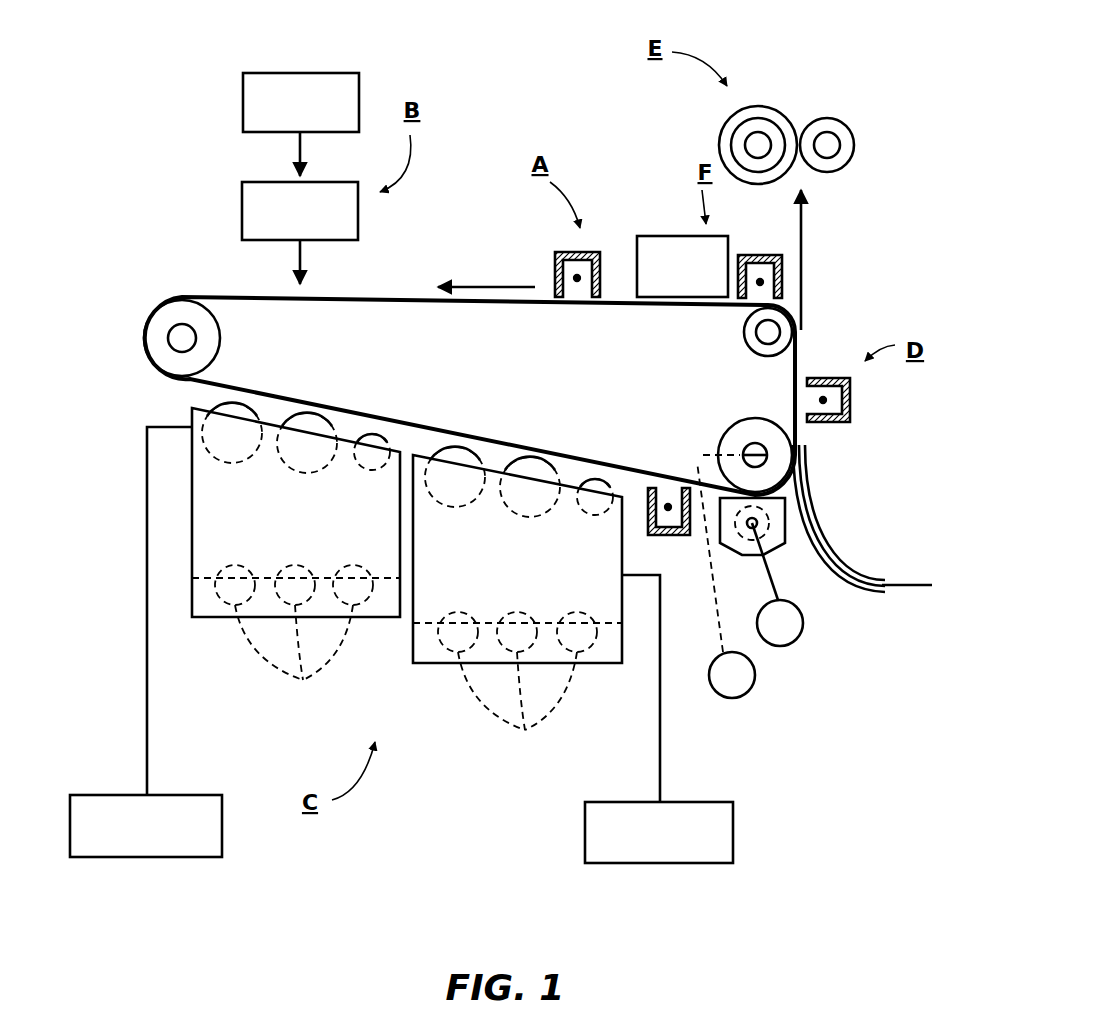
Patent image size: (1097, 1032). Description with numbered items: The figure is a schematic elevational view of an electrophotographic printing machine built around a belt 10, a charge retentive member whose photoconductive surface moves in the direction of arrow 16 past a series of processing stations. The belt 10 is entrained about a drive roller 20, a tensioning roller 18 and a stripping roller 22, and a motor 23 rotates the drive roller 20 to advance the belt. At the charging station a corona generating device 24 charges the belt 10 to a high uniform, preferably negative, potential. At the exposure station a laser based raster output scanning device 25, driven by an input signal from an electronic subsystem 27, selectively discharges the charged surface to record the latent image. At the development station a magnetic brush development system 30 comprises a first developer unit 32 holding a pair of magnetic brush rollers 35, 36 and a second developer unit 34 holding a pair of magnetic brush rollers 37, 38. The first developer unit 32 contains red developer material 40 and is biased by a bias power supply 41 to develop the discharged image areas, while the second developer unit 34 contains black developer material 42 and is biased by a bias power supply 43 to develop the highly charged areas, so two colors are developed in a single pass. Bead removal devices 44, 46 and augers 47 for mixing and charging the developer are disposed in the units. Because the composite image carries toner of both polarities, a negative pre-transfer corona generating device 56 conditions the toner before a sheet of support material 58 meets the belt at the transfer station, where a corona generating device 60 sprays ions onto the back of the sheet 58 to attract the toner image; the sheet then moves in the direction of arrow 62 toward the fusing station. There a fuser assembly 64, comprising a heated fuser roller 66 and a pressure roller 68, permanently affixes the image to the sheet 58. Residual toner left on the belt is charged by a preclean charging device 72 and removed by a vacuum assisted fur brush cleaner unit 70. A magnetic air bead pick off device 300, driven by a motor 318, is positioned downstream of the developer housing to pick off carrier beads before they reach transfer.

The belt 10 is at (380, 298).
The arrow 16 is at (480, 287).
The tensioning roller 18 is at (143, 336).
The drive roller 20 is at (738, 437).
The stripping roller 22 is at (750, 337).
The motor 23 is at (737, 697).
The corona generating device 24 is at (568, 252).
The raster output scanning device 25 is at (242, 208).
The electronic subsystem 27 is at (243, 100).
The magnetic brush development system 30 is at (370, 555).
The first developer unit 32 is at (205, 620).
The second developer unit 34 is at (425, 665).
The magnetic brush roller 35 is at (232, 403).
The magnetic brush roller 36 is at (307, 413).
The magnetic brush roller 37 is at (455, 447).
The magnetic brush roller 38 is at (531, 457).
The red developer material 40 is at (183, 620).
The bias power supply 41 is at (222, 828).
The black developer material 42 is at (610, 665).
The bias power supply 43 is at (733, 833).
The bead removal device 44 is at (373, 434).
The bead removal device 46 is at (597, 479).
The augers 47 is at (406, 663).
The pre-transfer corona generating device 56 is at (672, 537).
The sheet of support material 58 is at (912, 585).
The corona generating device 60 is at (852, 400).
The arrow 62 is at (800, 264).
The fuser assembly 64 is at (818, 123).
The heated fuser roller 66 is at (758, 107).
The pressure roller 68 is at (826, 118).
The fur brush cleaner unit 70 is at (681, 238).
The preclean charging device 72 is at (757, 253).
The magnetic air bead pick off device 300 is at (797, 562).
The motor 318 is at (790, 640).